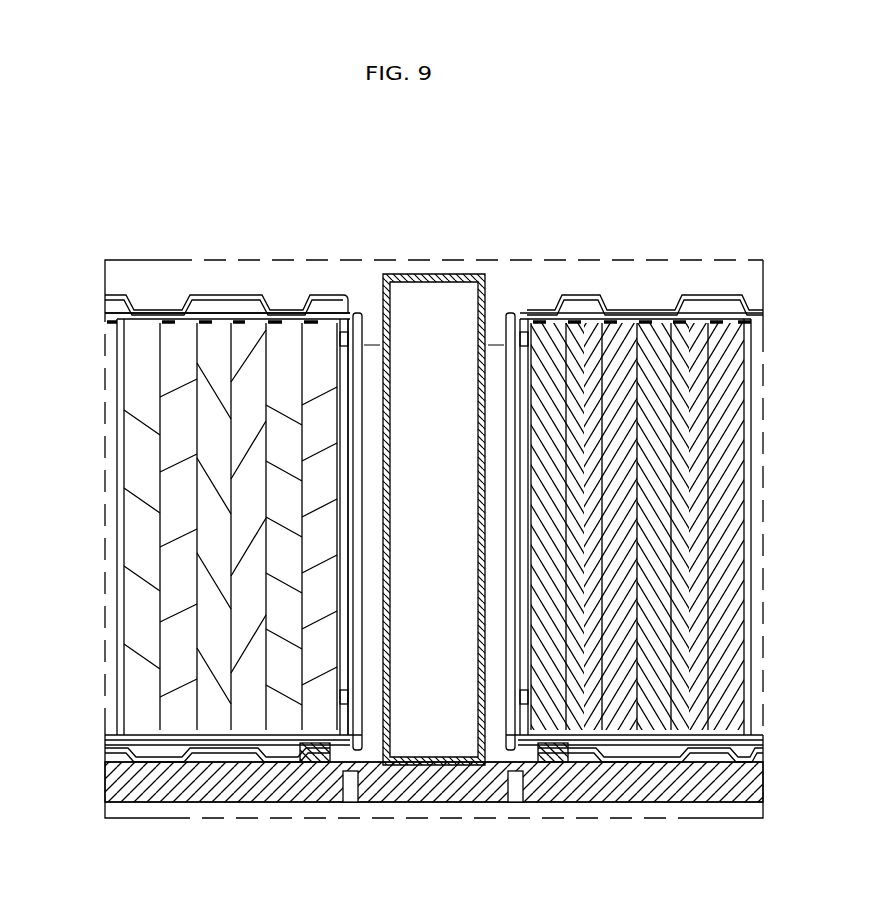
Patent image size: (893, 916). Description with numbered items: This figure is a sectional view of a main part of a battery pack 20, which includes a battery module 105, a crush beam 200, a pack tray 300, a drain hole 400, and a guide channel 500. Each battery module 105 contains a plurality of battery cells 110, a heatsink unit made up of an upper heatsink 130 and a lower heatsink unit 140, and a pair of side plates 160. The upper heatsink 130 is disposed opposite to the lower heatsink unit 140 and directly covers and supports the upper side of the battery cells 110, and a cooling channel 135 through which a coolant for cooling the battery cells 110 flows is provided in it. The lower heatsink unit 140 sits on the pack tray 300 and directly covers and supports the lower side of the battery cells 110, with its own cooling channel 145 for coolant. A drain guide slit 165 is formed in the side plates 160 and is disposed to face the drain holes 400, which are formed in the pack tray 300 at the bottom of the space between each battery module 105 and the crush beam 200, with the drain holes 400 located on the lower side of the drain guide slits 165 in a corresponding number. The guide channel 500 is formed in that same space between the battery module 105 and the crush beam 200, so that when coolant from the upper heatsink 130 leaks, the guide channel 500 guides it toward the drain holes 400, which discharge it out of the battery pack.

The battery pack 20 is at (161, 191).
The battery module 105 is at (663, 280).
The battery cell 110 is at (137, 477).
The upper heatsink 130 is at (103, 302).
The cooling channel 135 is at (232, 312).
The lower heatsink unit 140 is at (104, 746).
The cooling channel 145 is at (237, 746).
The side plate 160 is at (362, 393).
The drain guide slit 165 is at (350, 318).
The crush beam 200 is at (432, 274).
The pack tray 300 is at (298, 800).
The drain hole 400 is at (352, 803).
The guide channel 500 is at (372, 344).